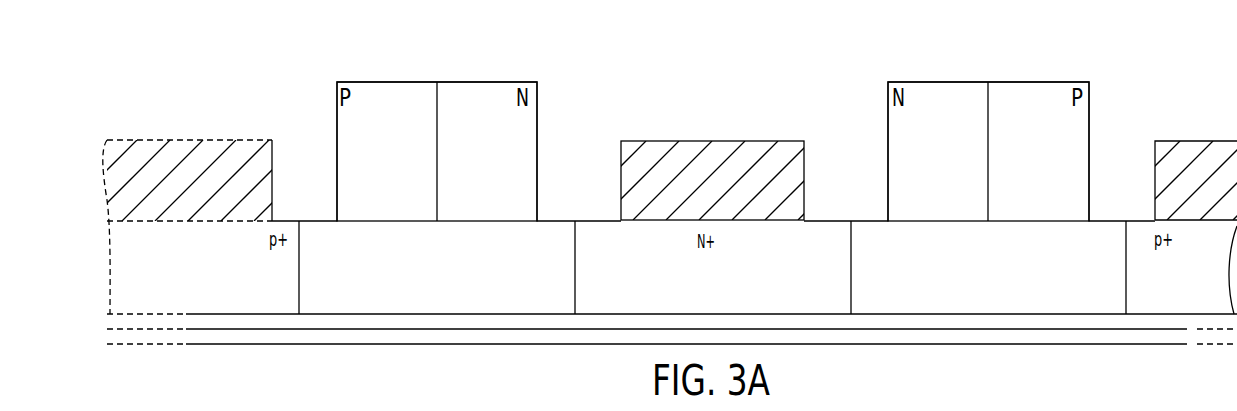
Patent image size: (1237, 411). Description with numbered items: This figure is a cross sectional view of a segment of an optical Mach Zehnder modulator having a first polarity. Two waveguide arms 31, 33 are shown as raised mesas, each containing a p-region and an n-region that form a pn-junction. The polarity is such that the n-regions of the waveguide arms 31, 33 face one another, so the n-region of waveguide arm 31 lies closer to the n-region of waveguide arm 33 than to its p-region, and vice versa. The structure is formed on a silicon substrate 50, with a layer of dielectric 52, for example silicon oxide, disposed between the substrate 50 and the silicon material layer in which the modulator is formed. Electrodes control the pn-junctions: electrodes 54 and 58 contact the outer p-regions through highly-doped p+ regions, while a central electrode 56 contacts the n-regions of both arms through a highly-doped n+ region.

The waveguide arm 31 is at (505, 57).
The waveguide arm 33 is at (1050, 57).
The silicon substrate 50 is at (210, 337).
The layer of dielectric 52 is at (198, 321).
The electrode 54 is at (165, 140).
The electrode 56 is at (715, 140).
The electrode 58 is at (1200, 140).